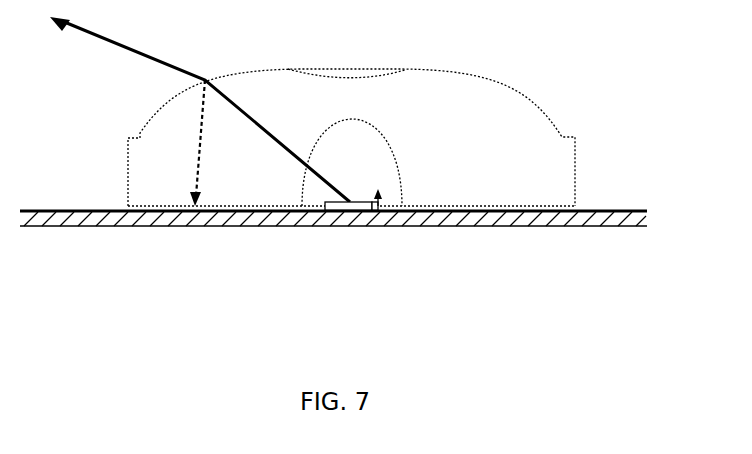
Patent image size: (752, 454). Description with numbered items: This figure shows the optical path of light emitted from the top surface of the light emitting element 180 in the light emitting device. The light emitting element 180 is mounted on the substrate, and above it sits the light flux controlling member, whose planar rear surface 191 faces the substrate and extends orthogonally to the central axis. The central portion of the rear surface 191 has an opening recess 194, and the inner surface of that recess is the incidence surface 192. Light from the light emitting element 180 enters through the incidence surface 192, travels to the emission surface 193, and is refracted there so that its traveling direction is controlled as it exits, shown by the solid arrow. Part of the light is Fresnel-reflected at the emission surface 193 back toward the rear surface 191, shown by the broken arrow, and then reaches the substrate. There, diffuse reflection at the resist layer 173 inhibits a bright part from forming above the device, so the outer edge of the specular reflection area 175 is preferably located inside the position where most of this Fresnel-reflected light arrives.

The resist layer 173 is at (593, 210).
The rear surface 191 is at (530, 206).
The incidence surface 192 is at (373, 130).
The emission surface 193 is at (242, 70).
The opening recess 194 is at (374, 210).
The specular reflection area 175 is at (400, 204).
The light emitting element 180 is at (318, 212).